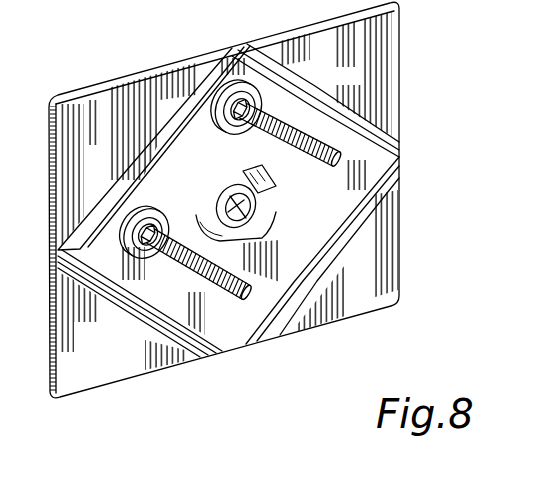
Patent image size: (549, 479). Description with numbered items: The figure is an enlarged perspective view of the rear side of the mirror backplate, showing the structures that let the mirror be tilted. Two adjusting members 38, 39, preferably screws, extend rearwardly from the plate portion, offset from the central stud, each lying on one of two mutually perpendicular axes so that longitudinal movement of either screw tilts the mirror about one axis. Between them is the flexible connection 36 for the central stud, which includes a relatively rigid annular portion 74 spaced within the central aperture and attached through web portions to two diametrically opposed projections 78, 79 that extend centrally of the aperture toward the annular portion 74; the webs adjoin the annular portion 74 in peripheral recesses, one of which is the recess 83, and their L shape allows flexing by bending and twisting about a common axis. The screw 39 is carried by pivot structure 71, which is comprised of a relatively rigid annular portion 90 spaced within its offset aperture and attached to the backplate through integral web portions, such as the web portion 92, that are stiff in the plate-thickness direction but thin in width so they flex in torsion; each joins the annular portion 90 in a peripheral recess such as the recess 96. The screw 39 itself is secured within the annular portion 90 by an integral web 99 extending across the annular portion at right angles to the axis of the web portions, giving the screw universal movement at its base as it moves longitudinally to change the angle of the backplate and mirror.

The flexible connection 36 is at (235, 190).
The adjusting member 38 is at (195, 250).
The adjusting member 39 is at (265, 106).
The pivot structure 71 is at (268, 90).
The annular portion 74 is at (222, 183).
The projection 78 is at (272, 191).
The projection 79 is at (210, 210).
The peripheral recess 83 is at (200, 200).
The annular portion 90 is at (225, 85).
The web portion 92 is at (214, 108).
The peripheral recess 96 is at (213, 115).
The web 99 is at (225, 86).